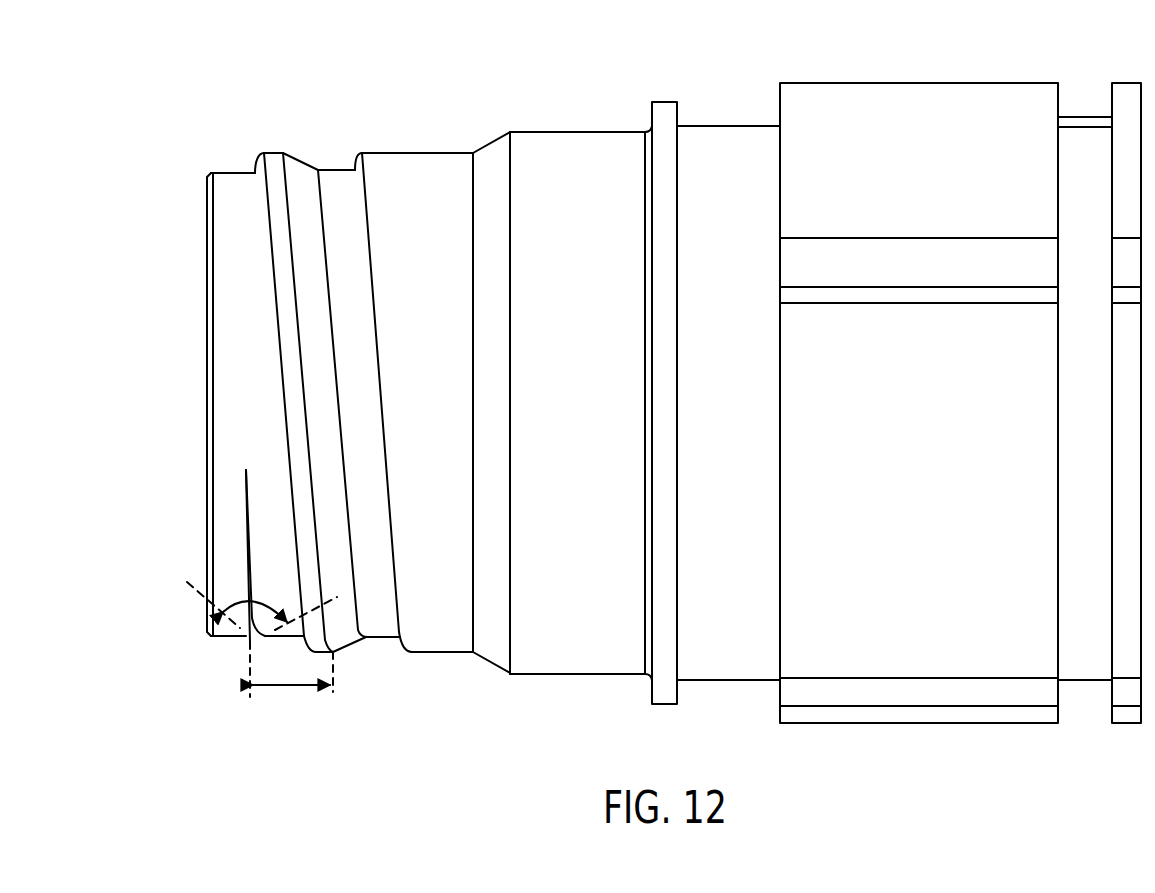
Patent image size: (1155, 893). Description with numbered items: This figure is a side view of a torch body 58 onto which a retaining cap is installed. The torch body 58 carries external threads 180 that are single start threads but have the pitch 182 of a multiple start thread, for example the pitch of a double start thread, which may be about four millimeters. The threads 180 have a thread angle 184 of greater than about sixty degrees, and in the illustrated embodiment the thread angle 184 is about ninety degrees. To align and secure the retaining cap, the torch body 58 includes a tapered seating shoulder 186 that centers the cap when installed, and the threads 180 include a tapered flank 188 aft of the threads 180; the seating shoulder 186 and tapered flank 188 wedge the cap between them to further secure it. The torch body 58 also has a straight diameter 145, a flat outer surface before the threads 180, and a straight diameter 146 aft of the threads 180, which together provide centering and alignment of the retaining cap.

The torch body 58 is at (1020, 52).
The straight diameter 145 is at (238, 171).
The straight diameter 146 is at (578, 132).
The external threads 180 is at (257, 123).
The pitch 182 is at (292, 687).
The thread angle 184 is at (241, 600).
The tapered seating shoulder 186 is at (487, 144).
The tapered flank 188 is at (304, 163).